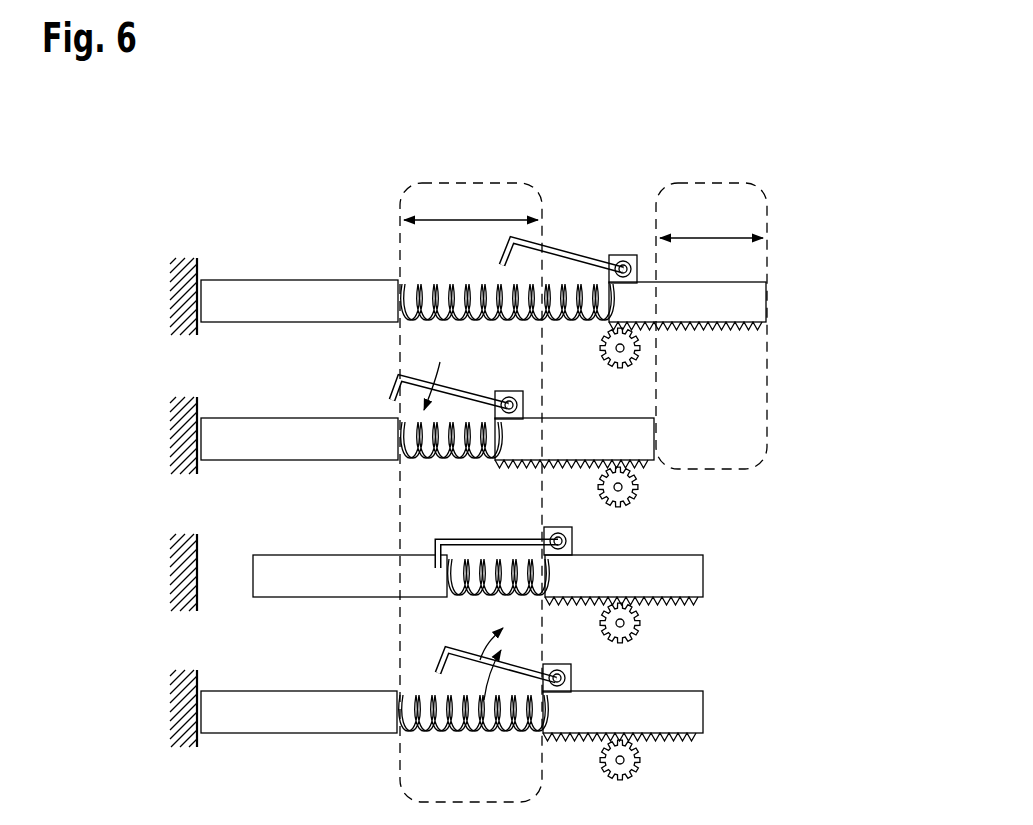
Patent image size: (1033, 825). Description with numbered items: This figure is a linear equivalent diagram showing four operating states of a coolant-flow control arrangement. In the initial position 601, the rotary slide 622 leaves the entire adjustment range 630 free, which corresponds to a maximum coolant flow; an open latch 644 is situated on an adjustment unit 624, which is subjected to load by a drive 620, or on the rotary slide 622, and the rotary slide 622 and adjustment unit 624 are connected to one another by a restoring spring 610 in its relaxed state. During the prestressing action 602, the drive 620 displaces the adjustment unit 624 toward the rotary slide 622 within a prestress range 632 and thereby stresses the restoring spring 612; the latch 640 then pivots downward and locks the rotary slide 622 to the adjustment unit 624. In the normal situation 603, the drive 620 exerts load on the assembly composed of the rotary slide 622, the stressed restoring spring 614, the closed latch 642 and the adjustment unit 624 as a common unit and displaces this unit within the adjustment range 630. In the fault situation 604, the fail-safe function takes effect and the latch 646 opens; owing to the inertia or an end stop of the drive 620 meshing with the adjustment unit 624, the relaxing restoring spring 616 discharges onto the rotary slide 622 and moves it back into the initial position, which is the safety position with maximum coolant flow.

The initial position 601 is at (160, 291).
The prestressing action 602 is at (160, 436).
The normal situation 603 is at (160, 581).
The fault situation 604 is at (160, 716).
The restoring spring 610 is at (440, 280).
The restoring spring 612 is at (437, 462).
The restoring spring 614 is at (465, 600).
The restoring spring 616 is at (437, 737).
The drive 620 is at (650, 346).
The rotary slide 622 is at (268, 436).
The adjustment unit 624 is at (683, 305).
The adjustment range 630 is at (477, 213).
The prestress range 632 is at (712, 213).
The latch 640 is at (472, 374).
The closed latch 642 is at (478, 532).
The open latch 644 is at (572, 248).
The latch 646 is at (518, 656).